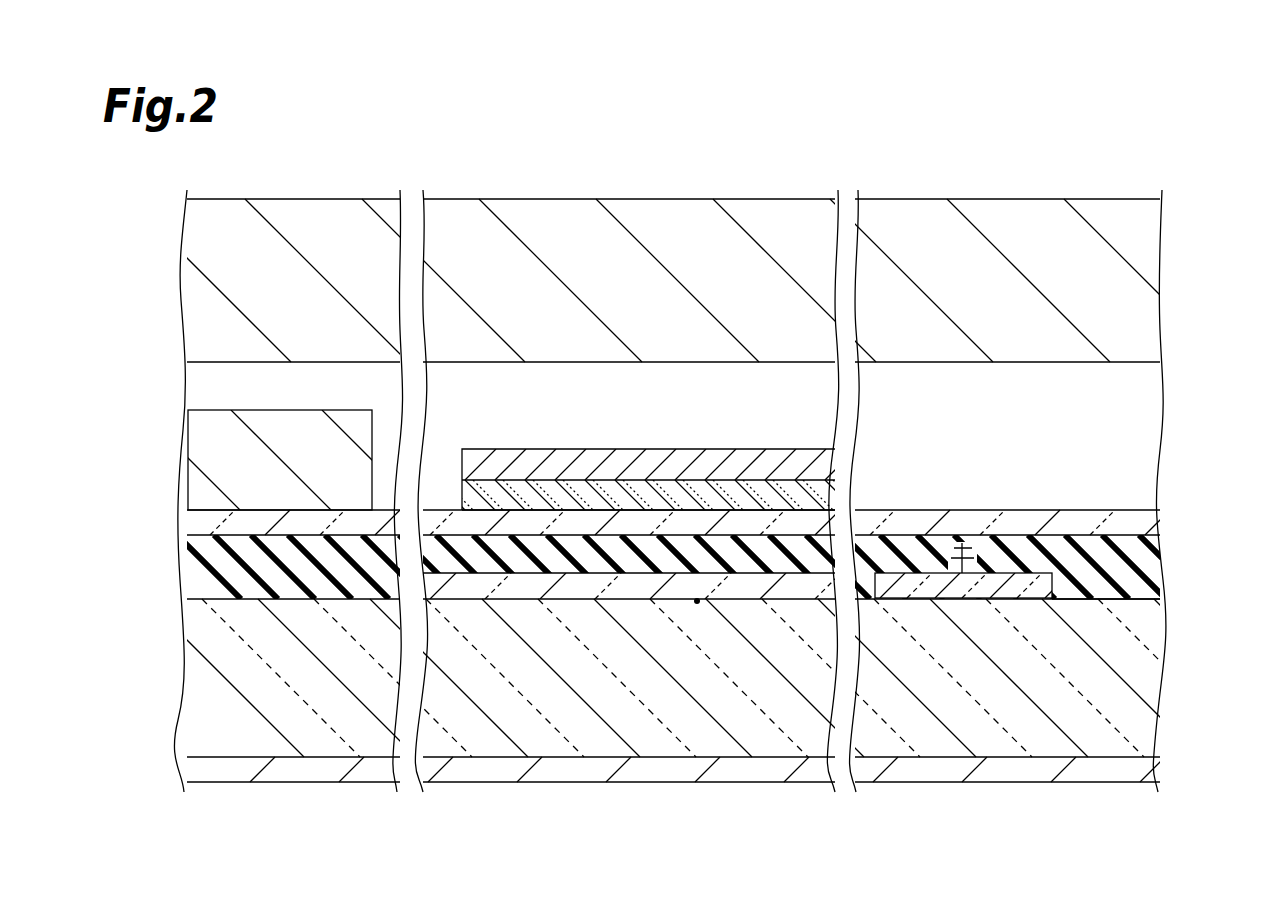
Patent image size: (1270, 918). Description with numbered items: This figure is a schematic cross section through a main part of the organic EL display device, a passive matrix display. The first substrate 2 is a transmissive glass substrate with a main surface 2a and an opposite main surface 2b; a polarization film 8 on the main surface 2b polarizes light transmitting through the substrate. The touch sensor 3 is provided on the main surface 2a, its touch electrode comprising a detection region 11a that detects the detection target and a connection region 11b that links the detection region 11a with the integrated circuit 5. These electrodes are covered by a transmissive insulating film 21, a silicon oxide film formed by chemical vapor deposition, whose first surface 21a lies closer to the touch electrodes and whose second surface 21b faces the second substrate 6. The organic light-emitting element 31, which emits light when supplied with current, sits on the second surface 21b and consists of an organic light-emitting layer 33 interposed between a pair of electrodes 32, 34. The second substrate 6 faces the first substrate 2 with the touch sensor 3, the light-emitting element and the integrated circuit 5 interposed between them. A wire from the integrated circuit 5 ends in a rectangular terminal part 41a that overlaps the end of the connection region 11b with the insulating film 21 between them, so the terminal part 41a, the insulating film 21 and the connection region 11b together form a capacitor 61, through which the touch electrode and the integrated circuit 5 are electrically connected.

The first substrate 2 is at (1145, 679).
The main surface 2a is at (1148, 598).
The main surface 2b is at (1147, 773).
The touch sensor 3 is at (697, 604).
The integrated circuit 5 is at (188, 443).
The second substrate 6 is at (1148, 323).
The polarization film 8 is at (1097, 775).
The detection region 11a is at (625, 585).
The connection region 11b is at (963, 588).
The insulating film 21 is at (1145, 558).
The first surface 21a is at (1092, 600).
The second surface 21b is at (1090, 535).
The organic light-emitting element 31 is at (632, 402).
The electrode 32 is at (528, 523).
The organic light-emitting layer 33 is at (570, 480).
The electrode 34 is at (610, 470).
The terminal part 41a is at (1145, 520).
The capacitor 61 is at (953, 535).